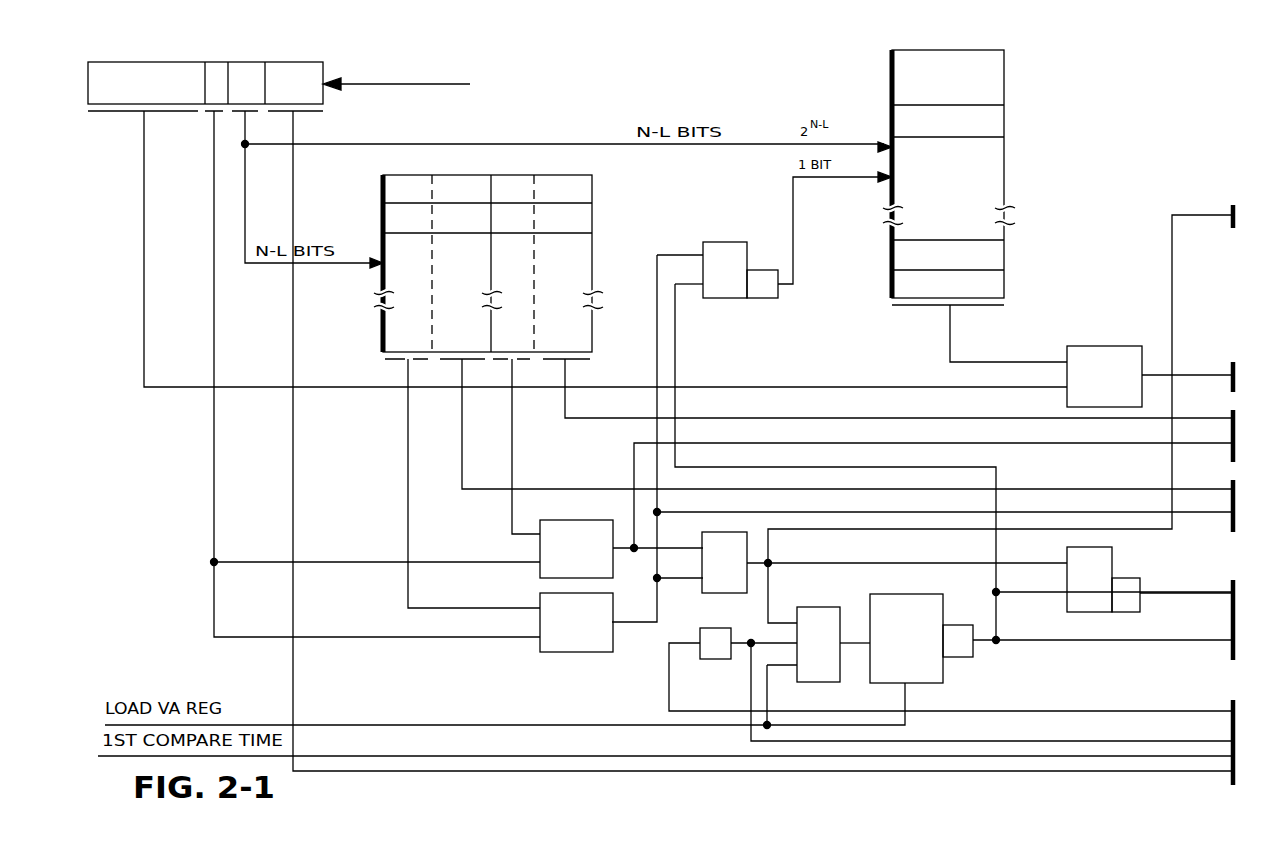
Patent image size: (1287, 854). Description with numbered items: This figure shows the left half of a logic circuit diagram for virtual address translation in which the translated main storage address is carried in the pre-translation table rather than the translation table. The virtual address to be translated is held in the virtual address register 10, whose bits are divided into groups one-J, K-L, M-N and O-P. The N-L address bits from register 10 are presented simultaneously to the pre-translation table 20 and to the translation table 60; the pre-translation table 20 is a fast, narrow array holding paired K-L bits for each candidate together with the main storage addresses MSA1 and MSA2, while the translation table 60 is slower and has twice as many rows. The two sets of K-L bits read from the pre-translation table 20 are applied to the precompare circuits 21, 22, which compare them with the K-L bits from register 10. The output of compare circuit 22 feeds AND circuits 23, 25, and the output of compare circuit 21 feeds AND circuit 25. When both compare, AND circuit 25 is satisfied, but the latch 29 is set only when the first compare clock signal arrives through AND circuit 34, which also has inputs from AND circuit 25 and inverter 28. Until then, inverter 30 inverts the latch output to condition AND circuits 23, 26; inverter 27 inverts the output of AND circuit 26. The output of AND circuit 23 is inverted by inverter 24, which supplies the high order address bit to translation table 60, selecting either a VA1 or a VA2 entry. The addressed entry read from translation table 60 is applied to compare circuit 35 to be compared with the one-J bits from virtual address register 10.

The virtual address register 10 is at (325, 104).
The pre-translation table 20 is at (592, 327).
The precompare circuit 21 is at (590, 520).
The precompare circuit 22 is at (540, 593).
The AND circuit 23 is at (734, 288).
The inverter 24 is at (762, 298).
The AND circuit 25 is at (733, 581).
The AND circuit 26 is at (1098, 598).
The inverter 27 is at (1140, 600).
The inverter 28 is at (714, 659).
The latch 29 is at (870, 600).
The inverter 30 is at (960, 657).
The AND circuit 34 is at (827, 664).
The compare circuit 35 is at (1098, 346).
The translation table 60 is at (1004, 70).